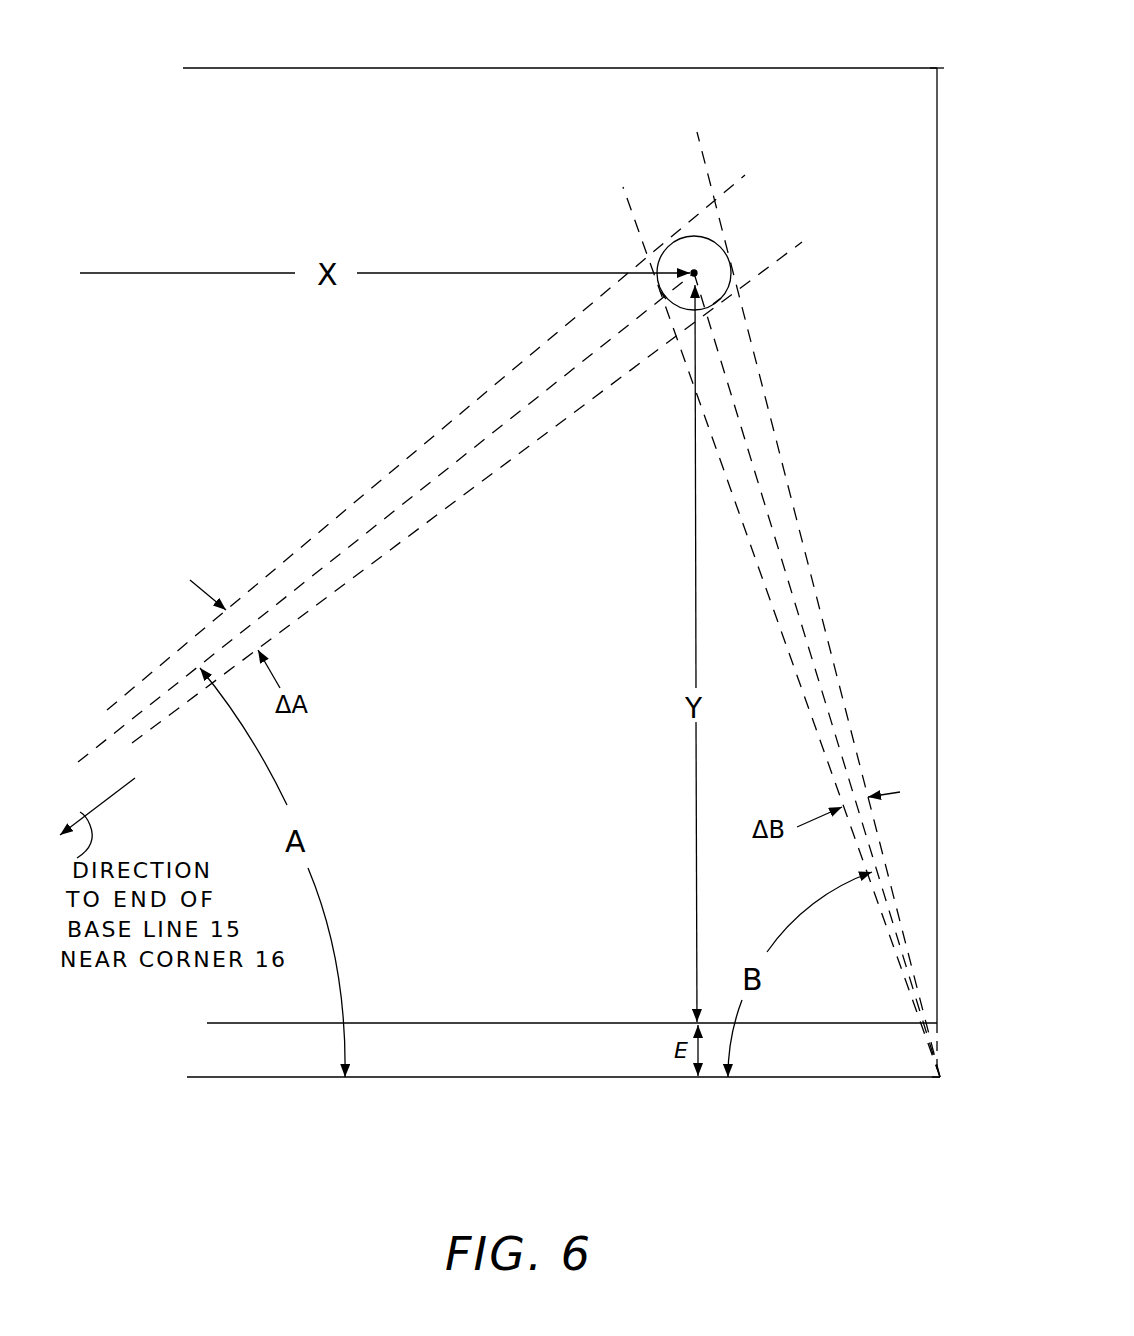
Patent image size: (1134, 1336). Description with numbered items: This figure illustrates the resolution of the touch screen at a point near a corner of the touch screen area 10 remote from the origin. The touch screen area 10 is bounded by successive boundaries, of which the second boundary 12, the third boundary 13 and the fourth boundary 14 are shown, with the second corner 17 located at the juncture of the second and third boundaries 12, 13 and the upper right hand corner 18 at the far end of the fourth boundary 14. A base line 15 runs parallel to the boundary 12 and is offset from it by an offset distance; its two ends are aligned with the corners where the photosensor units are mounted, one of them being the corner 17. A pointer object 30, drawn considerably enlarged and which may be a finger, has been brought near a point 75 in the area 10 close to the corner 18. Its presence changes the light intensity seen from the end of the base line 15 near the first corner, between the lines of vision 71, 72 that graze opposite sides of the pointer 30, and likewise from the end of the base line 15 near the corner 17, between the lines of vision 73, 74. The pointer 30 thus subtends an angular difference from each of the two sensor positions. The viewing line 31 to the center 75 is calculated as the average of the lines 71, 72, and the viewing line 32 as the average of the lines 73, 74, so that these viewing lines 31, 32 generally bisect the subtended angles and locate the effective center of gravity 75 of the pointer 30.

The touch screen area 10 is at (298, 128).
The second boundary 12 is at (505, 1023).
The third boundary 13 is at (938, 470).
The fourth boundary 14 is at (528, 68).
The base line 15 is at (570, 1080).
The second corner 17 is at (940, 1024).
The upper right hand corner 18 is at (937, 68).
The pointer object 30 is at (718, 237).
The viewing line 31 is at (380, 522).
The viewing line 32 is at (767, 508).
The line of vision 71 is at (443, 433).
The line of vision 72 is at (462, 497).
The line of vision 73 is at (803, 693).
The line of vision 74 is at (833, 648).
The center of the pointer 75 is at (699, 272).